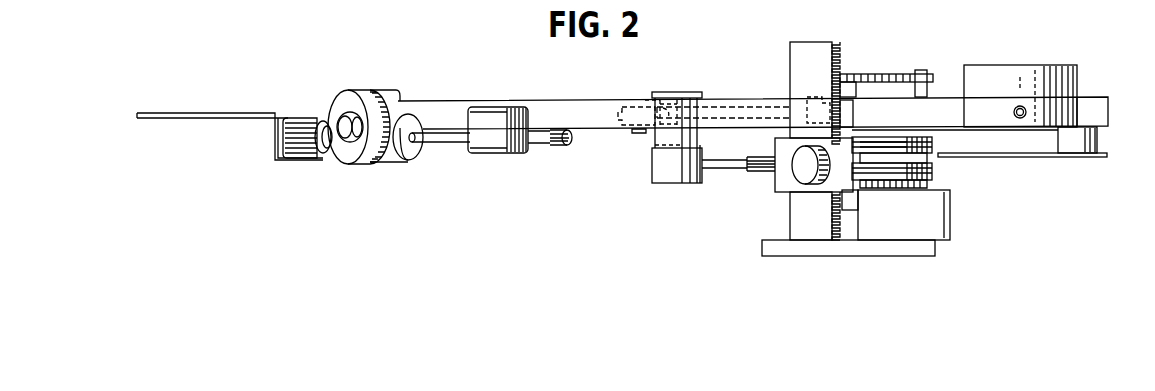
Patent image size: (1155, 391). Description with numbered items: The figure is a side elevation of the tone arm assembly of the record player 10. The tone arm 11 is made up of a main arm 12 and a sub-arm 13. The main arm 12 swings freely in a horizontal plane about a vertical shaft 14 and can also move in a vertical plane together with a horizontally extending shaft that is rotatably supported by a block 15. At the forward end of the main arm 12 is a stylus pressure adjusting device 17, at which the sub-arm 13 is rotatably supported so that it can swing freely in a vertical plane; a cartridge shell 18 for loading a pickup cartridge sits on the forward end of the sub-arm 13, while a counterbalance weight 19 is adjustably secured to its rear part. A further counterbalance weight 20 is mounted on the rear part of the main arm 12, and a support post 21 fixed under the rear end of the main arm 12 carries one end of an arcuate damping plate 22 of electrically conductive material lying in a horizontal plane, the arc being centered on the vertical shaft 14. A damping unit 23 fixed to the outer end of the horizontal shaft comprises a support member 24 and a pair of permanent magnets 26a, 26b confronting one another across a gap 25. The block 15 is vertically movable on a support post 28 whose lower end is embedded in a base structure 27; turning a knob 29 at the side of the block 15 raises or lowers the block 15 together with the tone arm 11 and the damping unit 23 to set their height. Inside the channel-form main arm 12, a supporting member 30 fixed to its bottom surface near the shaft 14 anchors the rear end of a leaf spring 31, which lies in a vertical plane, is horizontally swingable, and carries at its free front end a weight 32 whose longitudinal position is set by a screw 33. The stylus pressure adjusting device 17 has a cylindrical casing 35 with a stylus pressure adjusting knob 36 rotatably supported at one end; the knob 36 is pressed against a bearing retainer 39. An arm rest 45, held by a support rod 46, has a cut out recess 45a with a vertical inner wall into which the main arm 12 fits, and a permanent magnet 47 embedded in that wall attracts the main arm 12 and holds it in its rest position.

The record player 10 is at (704, 43).
The tone arm 11 is at (753, 88).
The main arm 12 is at (600, 100).
The sub-arm 13 is at (438, 142).
The vertical shaft 14 is at (848, 114).
The block 15 is at (799, 181).
The stylus pressure adjusting device 17 is at (375, 91).
The cartridge shell 18 is at (223, 112).
The counterbalance weight 19 is at (493, 144).
The counterbalance weight 20 is at (1010, 65).
The support post 21 is at (1098, 141).
The arcuate damping plate 22 is at (1050, 157).
The damping unit 23 is at (935, 175).
The support member 24 is at (919, 129).
The gap 25 is at (920, 157).
The permanent magnet 26a is at (928, 148).
The permanent magnet 26b is at (887, 168).
The base structure 27 is at (838, 250).
The support post 28 is at (790, 58).
The knob 29 is at (805, 173).
The supporting member 30 is at (810, 97).
The leaf spring 31 is at (720, 110).
The weight 32 is at (618, 122).
The screw 33 is at (635, 134).
The cylindrical casing 35 is at (399, 97).
The stylus pressure adjusting knob 36 is at (352, 127).
The bearing retainer 39 is at (348, 137).
The arm rest 45 is at (666, 140).
The cut out recess 45a is at (643, 100).
The support rod 46 is at (724, 168).
The permanent magnet 47 is at (683, 100).